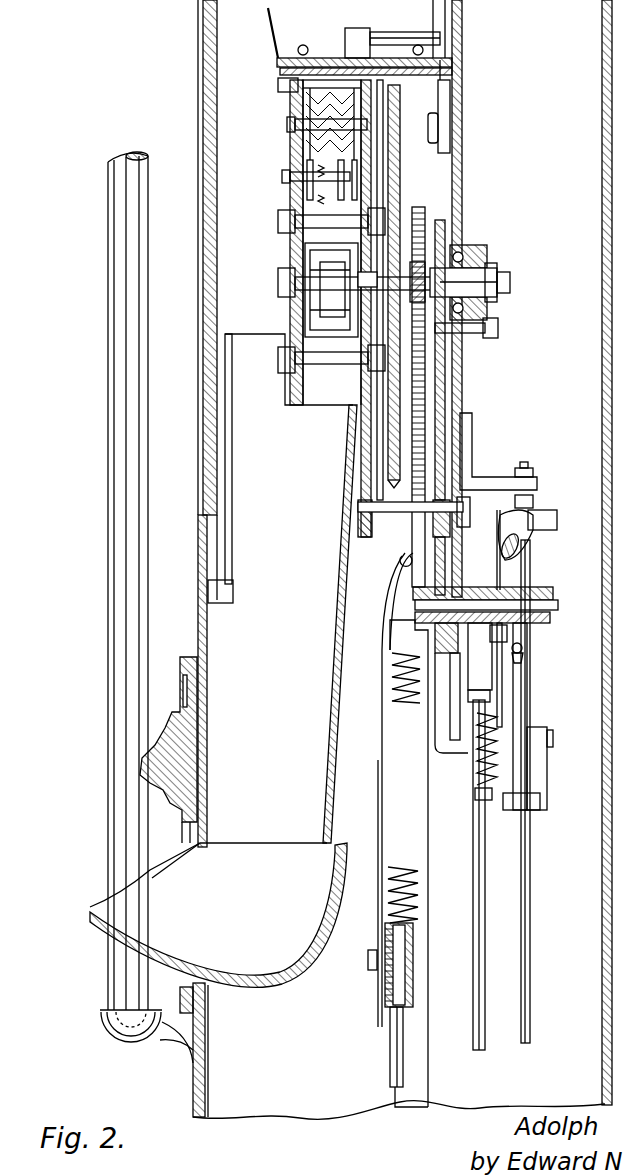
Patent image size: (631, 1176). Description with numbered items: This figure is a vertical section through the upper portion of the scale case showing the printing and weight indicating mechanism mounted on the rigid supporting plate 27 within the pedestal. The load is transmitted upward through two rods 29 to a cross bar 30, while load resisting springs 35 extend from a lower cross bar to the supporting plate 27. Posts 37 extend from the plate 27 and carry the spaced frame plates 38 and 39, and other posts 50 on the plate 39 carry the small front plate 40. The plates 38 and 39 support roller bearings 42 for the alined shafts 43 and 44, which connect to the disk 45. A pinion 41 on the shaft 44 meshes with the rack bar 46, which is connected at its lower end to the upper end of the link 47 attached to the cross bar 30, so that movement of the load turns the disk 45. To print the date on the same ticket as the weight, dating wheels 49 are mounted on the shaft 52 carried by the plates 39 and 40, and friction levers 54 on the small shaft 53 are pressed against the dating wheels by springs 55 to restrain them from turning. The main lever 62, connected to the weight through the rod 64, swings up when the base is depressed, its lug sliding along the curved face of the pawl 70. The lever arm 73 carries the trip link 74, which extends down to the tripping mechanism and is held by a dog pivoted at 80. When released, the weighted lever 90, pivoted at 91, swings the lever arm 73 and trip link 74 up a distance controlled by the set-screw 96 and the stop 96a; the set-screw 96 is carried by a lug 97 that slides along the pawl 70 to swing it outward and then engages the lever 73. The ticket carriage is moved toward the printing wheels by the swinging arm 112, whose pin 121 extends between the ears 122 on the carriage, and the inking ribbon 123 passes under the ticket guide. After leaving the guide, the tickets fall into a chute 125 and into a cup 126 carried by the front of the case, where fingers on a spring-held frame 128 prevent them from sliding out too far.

The supporting plate 27 is at (462, 145).
The rods 29 is at (395, 1075).
The cross bar 30 is at (415, 972).
The load resisting springs 35 is at (412, 703).
The posts 37 is at (392, 513).
The frame plate 38 is at (444, 405).
The frame plate 39 is at (360, 443).
The small front plate 40 is at (288, 300).
The pinion 41 is at (422, 260).
The roller bearings 42 is at (490, 233).
The shaft 43 is at (374, 282).
The shaft 44 is at (467, 282).
The disk 45 is at (400, 180).
The rack bar 46 is at (203, 119).
The link 47 is at (383, 741).
The dating wheels 49 is at (313, 103).
The posts 50 is at (325, 223).
The shaft 52 is at (287, 125).
The small shaft 53 is at (282, 177).
The friction levers 54 is at (332, 180).
The springs 55 is at (323, 186).
The main lever 62 is at (477, 590).
The rod 64 is at (473, 841).
The pawl 70 is at (502, 680).
The lever arm 73 is at (532, 547).
The trip link 74 is at (530, 887).
The pivot 80 is at (537, 757).
The lever 90 is at (535, 652).
The pivot 91 is at (558, 606).
The set-screw 96 is at (520, 657).
The stop 96a is at (532, 468).
The lug 97 is at (512, 640).
The swinging arm 112 is at (438, 13).
The pin 121 is at (410, 24).
The ears 122 is at (356, 30).
The inking ribbon 123 is at (278, 25).
The chute 125 is at (340, 614).
The cup 126 is at (253, 943).
The spring-held frame 128 is at (328, 60).